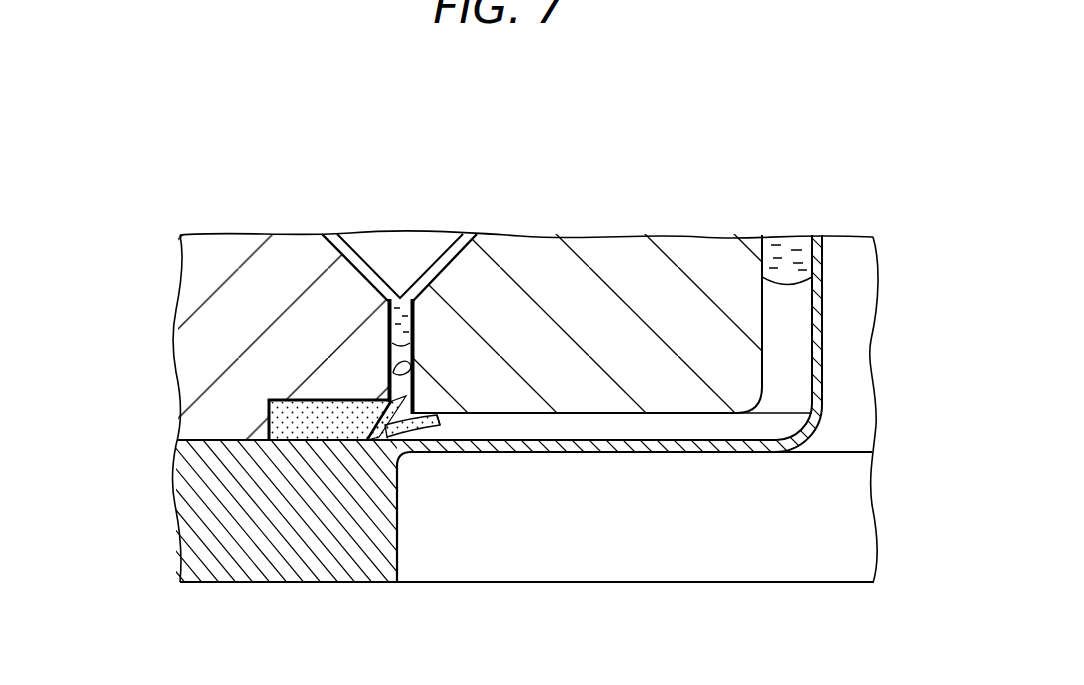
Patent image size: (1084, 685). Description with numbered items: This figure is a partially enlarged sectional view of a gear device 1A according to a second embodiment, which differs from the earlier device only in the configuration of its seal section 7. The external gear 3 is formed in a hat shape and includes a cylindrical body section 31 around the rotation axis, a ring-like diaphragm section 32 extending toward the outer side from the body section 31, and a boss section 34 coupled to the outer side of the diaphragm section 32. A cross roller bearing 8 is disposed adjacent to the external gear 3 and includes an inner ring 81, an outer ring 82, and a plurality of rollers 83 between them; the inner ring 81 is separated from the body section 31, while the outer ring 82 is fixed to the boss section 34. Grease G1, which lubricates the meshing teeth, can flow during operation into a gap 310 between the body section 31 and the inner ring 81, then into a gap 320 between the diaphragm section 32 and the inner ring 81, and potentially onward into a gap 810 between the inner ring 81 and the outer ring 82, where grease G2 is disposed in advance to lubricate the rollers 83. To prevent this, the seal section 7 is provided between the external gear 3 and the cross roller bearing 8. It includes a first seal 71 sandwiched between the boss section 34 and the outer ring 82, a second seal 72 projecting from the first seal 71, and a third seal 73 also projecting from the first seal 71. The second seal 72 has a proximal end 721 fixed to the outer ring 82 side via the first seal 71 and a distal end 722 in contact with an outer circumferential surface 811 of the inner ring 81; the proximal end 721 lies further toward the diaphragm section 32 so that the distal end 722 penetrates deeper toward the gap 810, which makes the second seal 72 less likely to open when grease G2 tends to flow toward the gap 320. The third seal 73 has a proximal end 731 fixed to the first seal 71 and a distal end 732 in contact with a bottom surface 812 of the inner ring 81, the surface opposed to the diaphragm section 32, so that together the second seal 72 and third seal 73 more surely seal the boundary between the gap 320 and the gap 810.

The gear device 1A is at (873, 128).
The cross roller bearing 8 is at (428, 275).
The outer ring 82 is at (298, 253).
The rollers 83 is at (392, 255).
The inner ring 81 is at (497, 257).
The grease G1 is at (797, 240).
The grease G2 is at (388, 313).
The gap 810 is at (388, 351).
The distal end 722 is at (394, 370).
The second seal 72 is at (248, 401).
The proximal end 721 is at (383, 407).
The seal section 7 is at (255, 498).
The first seal 71 is at (312, 425).
The third seal 73 is at (274, 527).
The proximal end 731 is at (400, 430).
The distal end 732 is at (440, 420).
The body section 31 is at (824, 298).
The external gear 3 is at (610, 437).
The gap 310 is at (790, 380).
The boss section 34 is at (281, 552).
The outer circumferential surface 811 is at (413, 378).
The bottom surface 812 is at (577, 415).
The gap 320 is at (674, 430).
The diaphragm section 32 is at (733, 445).